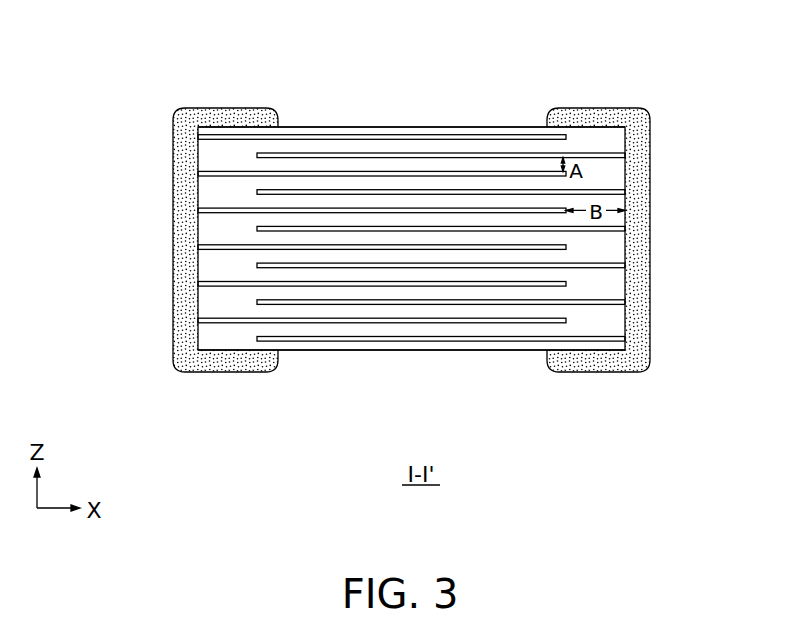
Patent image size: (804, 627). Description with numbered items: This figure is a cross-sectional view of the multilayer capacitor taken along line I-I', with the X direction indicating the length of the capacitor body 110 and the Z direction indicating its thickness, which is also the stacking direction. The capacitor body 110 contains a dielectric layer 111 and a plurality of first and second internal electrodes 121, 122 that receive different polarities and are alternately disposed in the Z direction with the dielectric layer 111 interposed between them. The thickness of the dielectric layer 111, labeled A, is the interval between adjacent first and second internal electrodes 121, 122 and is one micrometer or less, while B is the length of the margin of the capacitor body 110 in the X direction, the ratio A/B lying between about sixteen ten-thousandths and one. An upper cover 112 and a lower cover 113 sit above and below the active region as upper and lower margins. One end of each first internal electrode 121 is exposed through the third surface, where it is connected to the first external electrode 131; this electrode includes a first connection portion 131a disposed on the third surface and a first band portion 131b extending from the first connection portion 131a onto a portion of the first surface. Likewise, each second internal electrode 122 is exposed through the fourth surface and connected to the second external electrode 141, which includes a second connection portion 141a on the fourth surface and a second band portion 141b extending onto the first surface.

The capacitor body 110 is at (475, 229).
The dielectric layer 111 is at (605, 183).
The upper cover 112 is at (371, 127).
The lower cover 113 is at (423, 350).
The first internal electrode 121 is at (432, 135).
The second internal electrode 122 is at (498, 153).
The first external electrode 131 is at (149, 258).
The first connection portion 131a is at (175, 322).
The first band portion 131b is at (233, 370).
The second external electrode 141 is at (675, 258).
The second connection portion 141a is at (636, 322).
The second band portion 141b is at (591, 360).